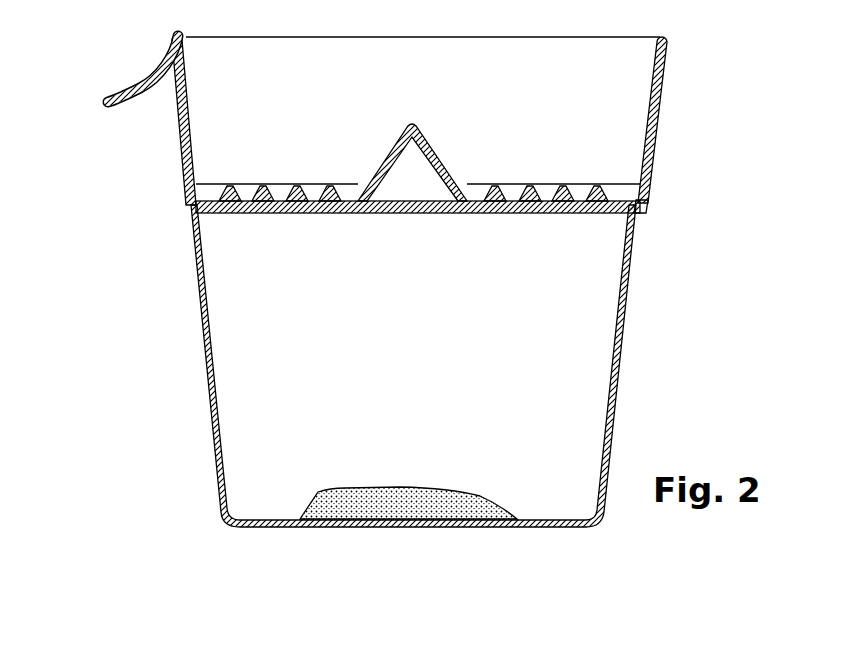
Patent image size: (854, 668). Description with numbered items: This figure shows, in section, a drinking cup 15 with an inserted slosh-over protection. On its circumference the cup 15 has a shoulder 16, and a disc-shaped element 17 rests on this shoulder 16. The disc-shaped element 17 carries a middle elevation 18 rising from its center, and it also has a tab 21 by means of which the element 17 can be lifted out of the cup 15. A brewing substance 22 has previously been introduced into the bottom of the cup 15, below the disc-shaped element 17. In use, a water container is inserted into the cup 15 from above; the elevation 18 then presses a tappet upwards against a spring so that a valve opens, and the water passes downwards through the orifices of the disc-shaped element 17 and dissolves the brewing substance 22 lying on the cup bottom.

The drinking cup 15 is at (212, 318).
The shoulder 16 is at (644, 213).
The disc-shaped element 17 is at (192, 212).
The middle elevation 18 is at (437, 158).
The tab 21 is at (113, 92).
The brewing substance 22 is at (462, 490).